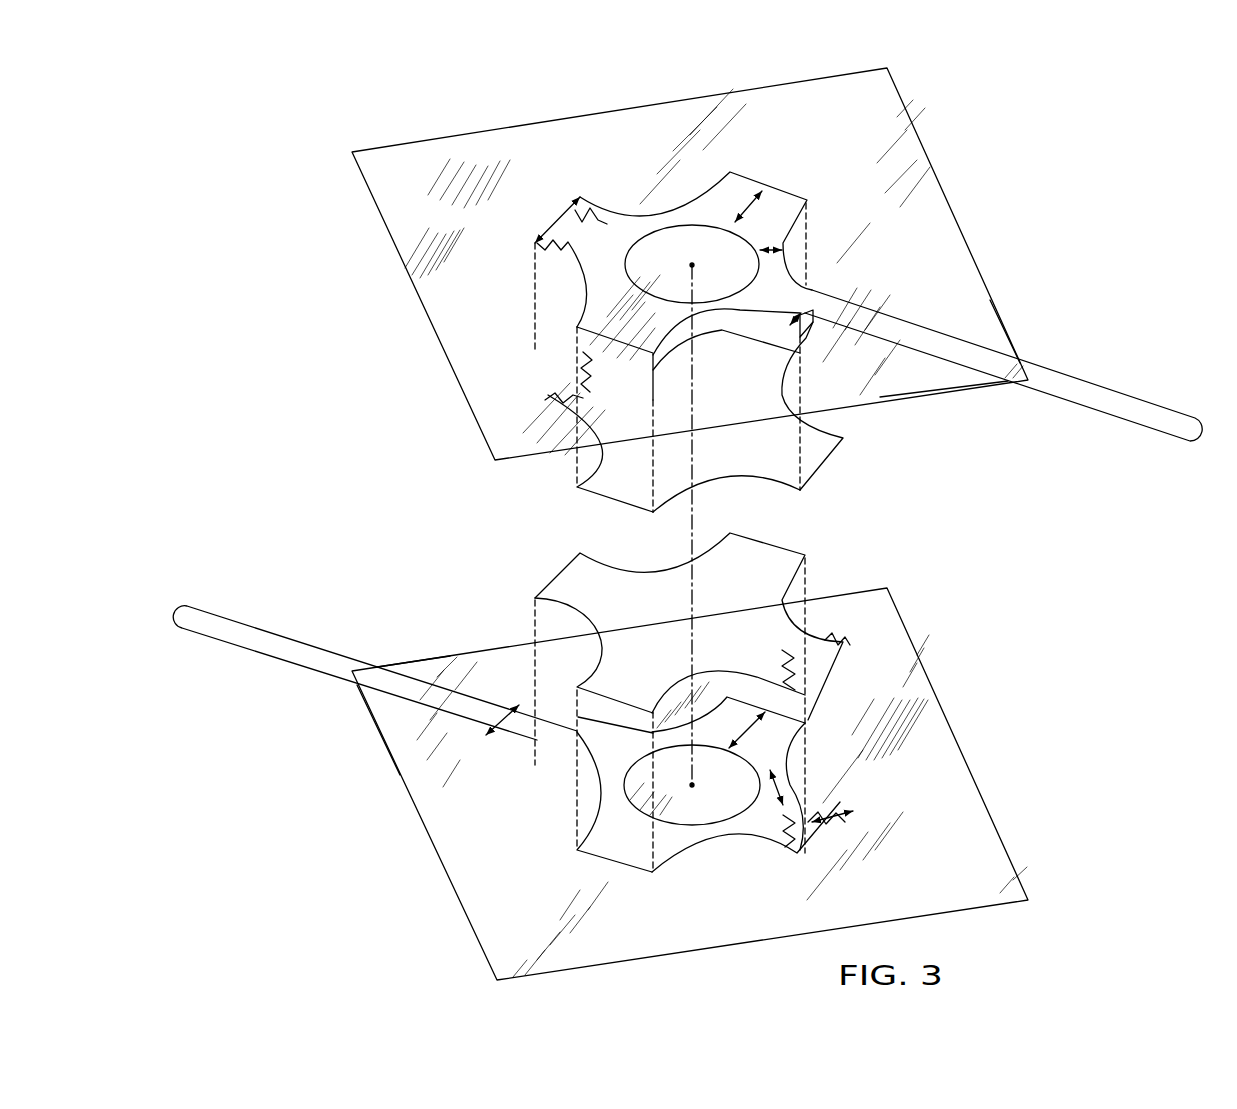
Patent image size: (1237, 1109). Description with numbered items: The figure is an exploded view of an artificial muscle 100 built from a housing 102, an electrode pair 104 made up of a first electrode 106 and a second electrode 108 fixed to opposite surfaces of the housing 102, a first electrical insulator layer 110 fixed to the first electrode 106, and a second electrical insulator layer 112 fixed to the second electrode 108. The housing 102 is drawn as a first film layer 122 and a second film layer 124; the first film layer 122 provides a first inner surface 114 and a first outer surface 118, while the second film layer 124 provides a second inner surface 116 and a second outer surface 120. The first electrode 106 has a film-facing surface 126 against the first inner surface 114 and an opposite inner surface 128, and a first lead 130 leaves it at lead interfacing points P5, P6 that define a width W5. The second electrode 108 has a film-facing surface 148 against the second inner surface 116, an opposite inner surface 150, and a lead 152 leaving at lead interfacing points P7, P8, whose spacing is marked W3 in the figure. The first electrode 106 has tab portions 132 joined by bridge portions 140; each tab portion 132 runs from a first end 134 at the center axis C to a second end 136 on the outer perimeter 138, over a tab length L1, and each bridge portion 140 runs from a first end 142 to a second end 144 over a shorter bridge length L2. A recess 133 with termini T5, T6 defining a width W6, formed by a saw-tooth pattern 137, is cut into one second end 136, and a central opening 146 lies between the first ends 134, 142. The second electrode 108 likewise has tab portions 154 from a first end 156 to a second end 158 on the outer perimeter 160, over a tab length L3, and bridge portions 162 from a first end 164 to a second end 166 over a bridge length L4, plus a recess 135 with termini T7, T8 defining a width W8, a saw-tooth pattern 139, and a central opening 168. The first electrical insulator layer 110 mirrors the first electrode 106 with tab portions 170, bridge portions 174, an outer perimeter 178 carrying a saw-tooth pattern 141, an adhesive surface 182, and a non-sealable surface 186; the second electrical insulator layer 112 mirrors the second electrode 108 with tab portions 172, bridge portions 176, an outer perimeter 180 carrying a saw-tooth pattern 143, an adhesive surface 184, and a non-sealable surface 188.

The artificial muscle 100 is at (195, 188).
The housing 102 is at (403, 135).
The electrode pair 104 is at (977, 433).
The first electrode 106 is at (718, 848).
The second electrode 108 is at (620, 180).
The first electrical insulator layer 110 is at (528, 578).
The second electrical insulator layer 112 is at (558, 475).
The first inner surface 114 is at (443, 667).
The second inner surface 116 is at (928, 395).
The first outer surface 118 is at (380, 730).
The second outer surface 120 is at (978, 373).
The first film layer 122 is at (963, 693).
The second film layer 124 is at (963, 200).
The film-facing surface 126 is at (633, 870).
The inner surface 128 is at (610, 850).
The first lead 130 is at (224, 627).
The tab portions 132 is at (810, 718).
The recess 133 is at (815, 848).
The first end 134 is at (725, 747).
The recess 135 is at (600, 224).
The second end 136 is at (763, 693).
The saw-tooth pattern 137 is at (790, 843).
The outer perimeter 138 is at (712, 697).
The saw-tooth pattern 139 is at (552, 247).
The bridge portions 140 is at (814, 781).
The saw-tooth pattern 141 is at (800, 650).
The first end 142 is at (720, 815).
The saw-tooth pattern 143 is at (550, 391).
The second end 144 is at (791, 768).
The central opening 146 is at (662, 800).
The film-facing surface 148 is at (712, 318).
The inner surface 150 is at (745, 308).
The lead 152 is at (1143, 413).
The tab portions 154 is at (753, 173).
The first end 156 is at (715, 243).
The second end 158 is at (781, 186).
The outer perimeter 160 is at (807, 200).
The bridge portions 162 is at (805, 260).
The first end 164 is at (757, 263).
The second end 166 is at (785, 243).
The central opening 168 is at (652, 272).
The tab portions 170 is at (760, 553).
The tab portions 172 is at (826, 475).
The bridge portions 174 is at (770, 610).
The bridge portions 176 is at (698, 481).
The outer perimeter 178 is at (835, 641).
The outer perimeter 180 is at (837, 435).
The adhesive surface 182 is at (558, 608).
The adhesive surface 184 is at (612, 487).
The non-sealable surface 186 is at (625, 580).
The non-sealable surface 188 is at (547, 400).
The center axis C is at (703, 586).
The tab length L1 is at (760, 728).
The bridge length L2 is at (772, 785).
The tab length L3 is at (748, 201).
The bridge length L4 is at (760, 250).
The lead interfacing point P5 is at (548, 742).
The lead interfacing point P6 is at (577, 703).
The lead interfacing point P7 is at (829, 303).
The lead interfacing point P8 is at (814, 324).
The first terminus T5 is at (813, 851).
The second terminus T6 is at (846, 800).
The first terminus T7 is at (580, 195).
The second terminus T8 is at (534, 244).
The third width W3 is at (797, 322).
The width W5 is at (512, 710).
The width W6 is at (843, 840).
The width W8 is at (547, 227).